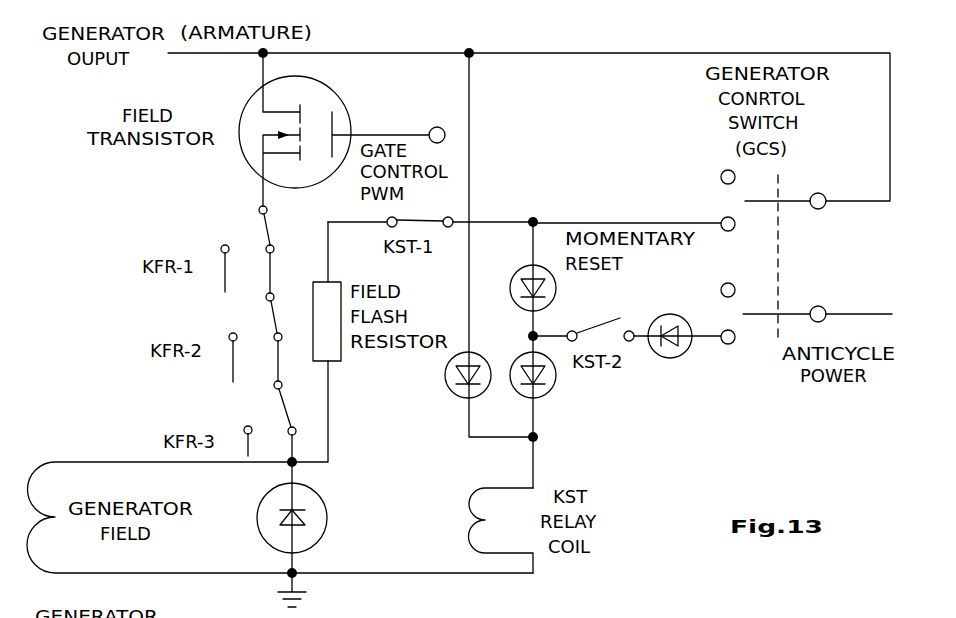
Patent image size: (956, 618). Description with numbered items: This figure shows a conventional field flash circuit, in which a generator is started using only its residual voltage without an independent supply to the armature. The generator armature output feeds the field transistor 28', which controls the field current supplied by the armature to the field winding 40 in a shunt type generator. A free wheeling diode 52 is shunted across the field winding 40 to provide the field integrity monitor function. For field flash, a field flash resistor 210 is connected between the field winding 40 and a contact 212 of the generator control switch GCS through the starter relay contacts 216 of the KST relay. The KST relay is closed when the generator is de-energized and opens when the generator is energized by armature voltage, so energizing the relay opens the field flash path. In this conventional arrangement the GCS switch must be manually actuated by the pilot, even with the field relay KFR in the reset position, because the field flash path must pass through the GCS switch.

The field transistor 28' is at (342, 129).
The contact of generator control switch 212 is at (652, 140).
The starter relay contacts 216 is at (340, 212).
The field flash resistor 210 is at (342, 354).
The field winding 40 is at (33, 458).
The free wheeling diode 52 is at (328, 526).